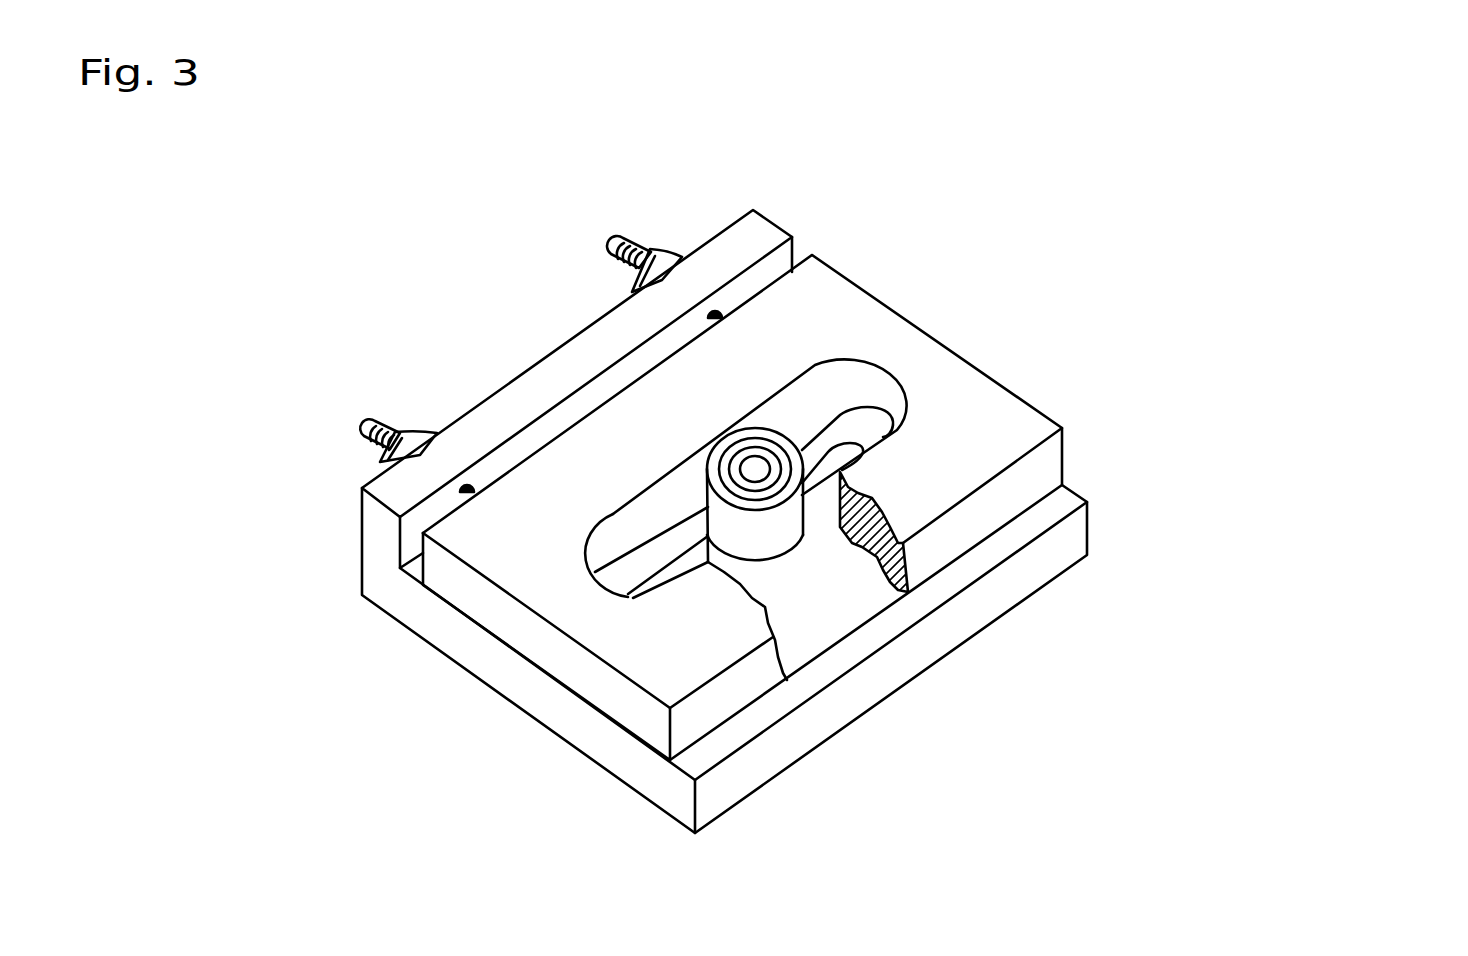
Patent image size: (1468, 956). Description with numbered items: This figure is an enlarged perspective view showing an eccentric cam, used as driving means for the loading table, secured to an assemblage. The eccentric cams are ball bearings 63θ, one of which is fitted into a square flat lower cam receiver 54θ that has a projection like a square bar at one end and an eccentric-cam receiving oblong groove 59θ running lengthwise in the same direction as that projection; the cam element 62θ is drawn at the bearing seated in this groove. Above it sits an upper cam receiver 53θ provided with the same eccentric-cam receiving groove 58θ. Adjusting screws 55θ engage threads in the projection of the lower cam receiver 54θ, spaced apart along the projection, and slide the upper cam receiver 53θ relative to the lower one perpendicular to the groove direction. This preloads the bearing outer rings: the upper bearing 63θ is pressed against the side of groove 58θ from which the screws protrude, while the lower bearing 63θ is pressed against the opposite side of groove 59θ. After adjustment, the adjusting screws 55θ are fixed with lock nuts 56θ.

The upper cam receiver 53 is at (987, 397).
The lower cam receiver 54 is at (1063, 547).
The adjusting screw 55 is at (642, 190).
The lock nut 56 is at (630, 280).
The eccentric-cam receiving groove 58 is at (610, 555).
The eccentric-cam receiving oblong groove 59 is at (820, 540).
The pin 62 is at (753, 456).
The ball bearing 63 is at (790, 443).